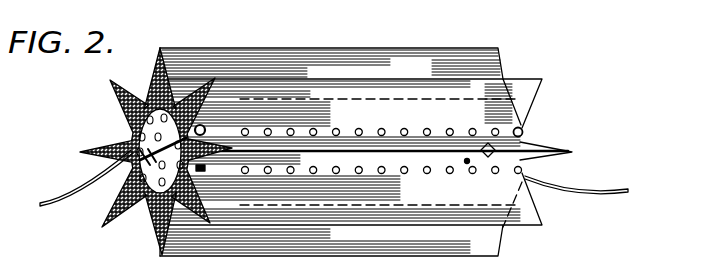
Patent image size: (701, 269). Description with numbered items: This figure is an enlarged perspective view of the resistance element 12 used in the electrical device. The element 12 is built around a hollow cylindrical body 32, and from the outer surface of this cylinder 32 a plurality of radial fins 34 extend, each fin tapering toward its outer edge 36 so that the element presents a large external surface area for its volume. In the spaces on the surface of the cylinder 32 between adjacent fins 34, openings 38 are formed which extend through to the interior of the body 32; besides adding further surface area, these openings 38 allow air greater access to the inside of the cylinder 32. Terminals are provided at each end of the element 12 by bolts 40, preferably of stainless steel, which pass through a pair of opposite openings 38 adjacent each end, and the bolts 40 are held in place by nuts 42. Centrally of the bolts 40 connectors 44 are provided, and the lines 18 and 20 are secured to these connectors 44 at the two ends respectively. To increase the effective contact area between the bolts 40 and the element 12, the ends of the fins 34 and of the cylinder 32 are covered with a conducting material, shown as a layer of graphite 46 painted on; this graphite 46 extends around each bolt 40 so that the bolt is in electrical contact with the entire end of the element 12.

The resistance element 12 is at (388, 128).
The line 18 is at (578, 180).
The line 20 is at (72, 197).
The hollow cylindrical body 32 is at (524, 130).
The radial fins 34 is at (458, 52).
The outer edges 36 is at (548, 80).
The openings 38 is at (245, 128).
The bolts 40 is at (140, 115).
The nuts 42 is at (206, 128).
The connectors 44 is at (150, 158).
The layer of graphite 46 is at (157, 72).